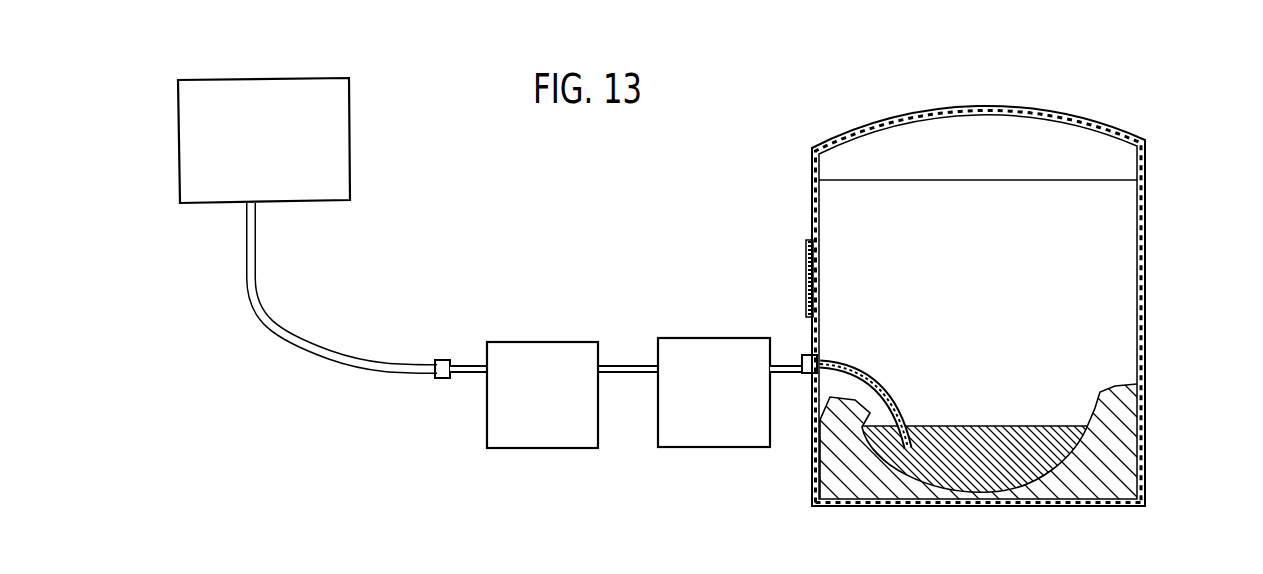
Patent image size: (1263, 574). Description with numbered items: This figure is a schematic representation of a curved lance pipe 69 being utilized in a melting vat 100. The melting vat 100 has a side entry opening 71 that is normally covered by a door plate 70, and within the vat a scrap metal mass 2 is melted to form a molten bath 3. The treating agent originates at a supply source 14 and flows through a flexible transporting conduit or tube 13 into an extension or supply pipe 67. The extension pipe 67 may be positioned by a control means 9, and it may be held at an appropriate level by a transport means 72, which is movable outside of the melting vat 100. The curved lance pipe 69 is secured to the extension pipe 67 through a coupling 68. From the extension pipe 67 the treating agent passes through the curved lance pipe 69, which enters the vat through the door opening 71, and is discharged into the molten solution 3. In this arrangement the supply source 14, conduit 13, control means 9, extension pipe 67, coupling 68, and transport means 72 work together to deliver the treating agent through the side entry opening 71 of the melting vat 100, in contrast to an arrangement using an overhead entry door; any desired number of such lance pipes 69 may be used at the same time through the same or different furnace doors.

The scrap metal mass 2 is at (1100, 392).
The molten bath 3 is at (1000, 425).
The control means 9 is at (558, 342).
The flexible transporting conduit 13 is at (347, 367).
The supply source 14 is at (350, 140).
The extension pipe 67 is at (468, 378).
The coupling 68 is at (814, 356).
The curved lance pipe 69 is at (876, 380).
The door plate 70 is at (805, 262).
The side entry opening 71 is at (810, 392).
The transport means 72 is at (720, 448).
The melting vat 100 is at (1145, 198).